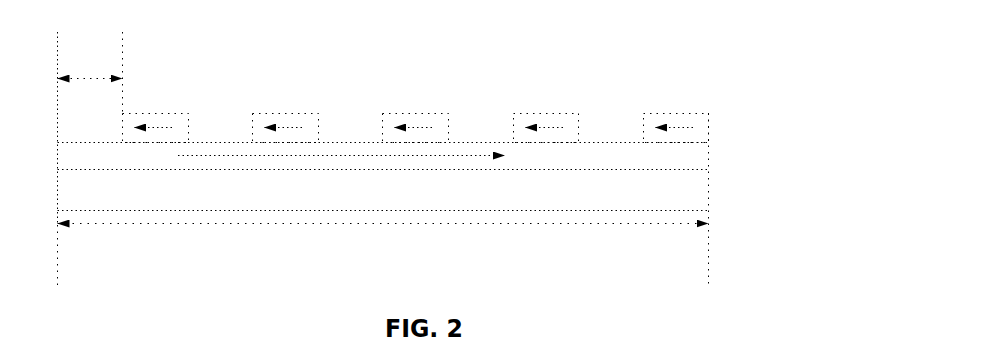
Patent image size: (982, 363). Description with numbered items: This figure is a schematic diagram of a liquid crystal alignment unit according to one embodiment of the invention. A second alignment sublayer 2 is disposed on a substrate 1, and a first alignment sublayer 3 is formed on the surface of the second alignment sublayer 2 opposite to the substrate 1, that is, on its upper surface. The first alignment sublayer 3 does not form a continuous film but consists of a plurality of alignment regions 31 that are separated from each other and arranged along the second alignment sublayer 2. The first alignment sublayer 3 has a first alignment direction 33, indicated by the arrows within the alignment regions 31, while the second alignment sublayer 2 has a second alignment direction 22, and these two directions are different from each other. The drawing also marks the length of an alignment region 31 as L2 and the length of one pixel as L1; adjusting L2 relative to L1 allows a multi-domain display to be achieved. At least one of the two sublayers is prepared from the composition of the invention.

The substrate 1 is at (692, 190).
The second alignment sublayer 2 is at (695, 157).
The second alignment direction 22 is at (372, 158).
The first alignment sublayer 3 is at (552, 115).
The first alignment direction 33 is at (158, 127).
The alignment region 31 is at (677, 118).
The length of one pixel L1 is at (383, 242).
The length of an alignment region L2 is at (90, 61).